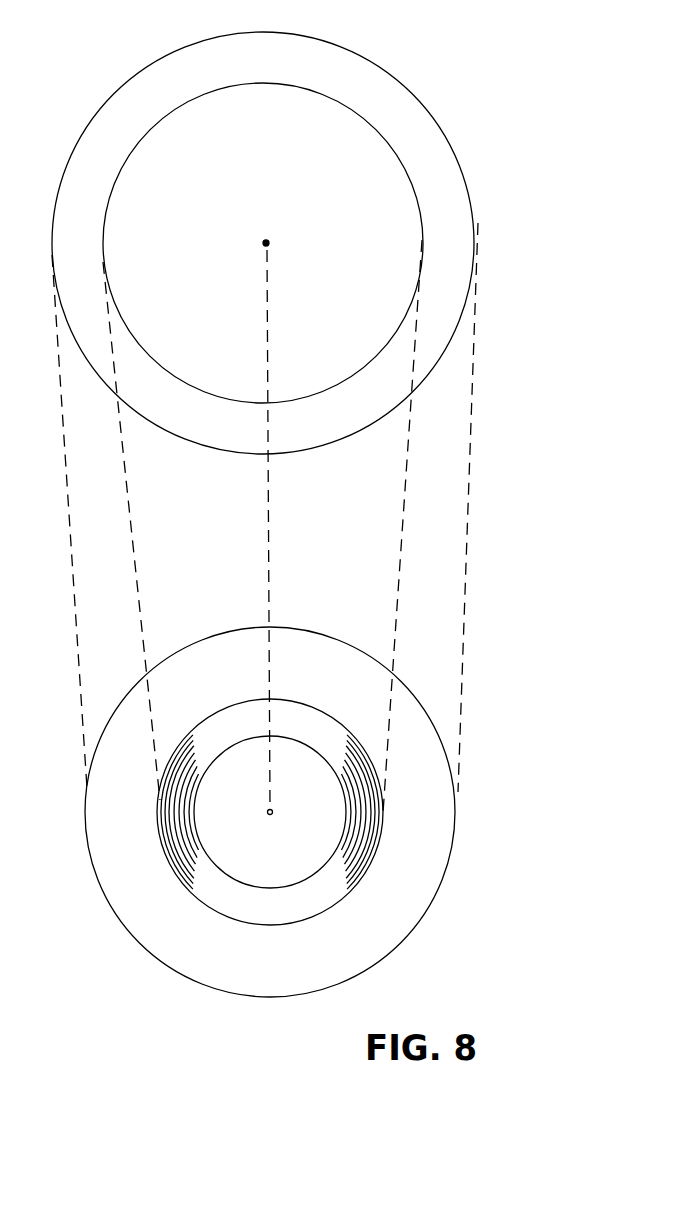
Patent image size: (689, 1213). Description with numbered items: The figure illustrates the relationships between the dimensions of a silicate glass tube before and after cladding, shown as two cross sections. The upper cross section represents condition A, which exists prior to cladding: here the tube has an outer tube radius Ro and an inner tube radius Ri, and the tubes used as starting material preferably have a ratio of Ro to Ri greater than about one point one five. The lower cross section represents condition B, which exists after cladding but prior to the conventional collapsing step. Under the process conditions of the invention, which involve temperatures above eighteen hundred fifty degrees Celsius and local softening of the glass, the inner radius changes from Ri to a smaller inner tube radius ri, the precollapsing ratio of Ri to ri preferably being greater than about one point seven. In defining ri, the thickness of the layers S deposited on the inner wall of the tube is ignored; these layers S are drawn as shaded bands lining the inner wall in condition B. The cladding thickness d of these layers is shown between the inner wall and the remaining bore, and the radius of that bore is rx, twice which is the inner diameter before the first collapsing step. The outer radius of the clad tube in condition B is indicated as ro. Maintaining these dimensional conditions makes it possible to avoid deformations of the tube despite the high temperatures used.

The condition A is at (312, 243).
The condition B is at (319, 812).
The outer tube radius Ro is at (58, 190).
The inner tube radius Ri is at (132, 332).
The outer radius of tube B ro is at (102, 742).
The inner tube radius after cladding ri is at (270, 812).
The inner radius before first collapsing step rx is at (337, 783).
The cladding thickness d is at (333, 678).
The layers S is at (353, 833).